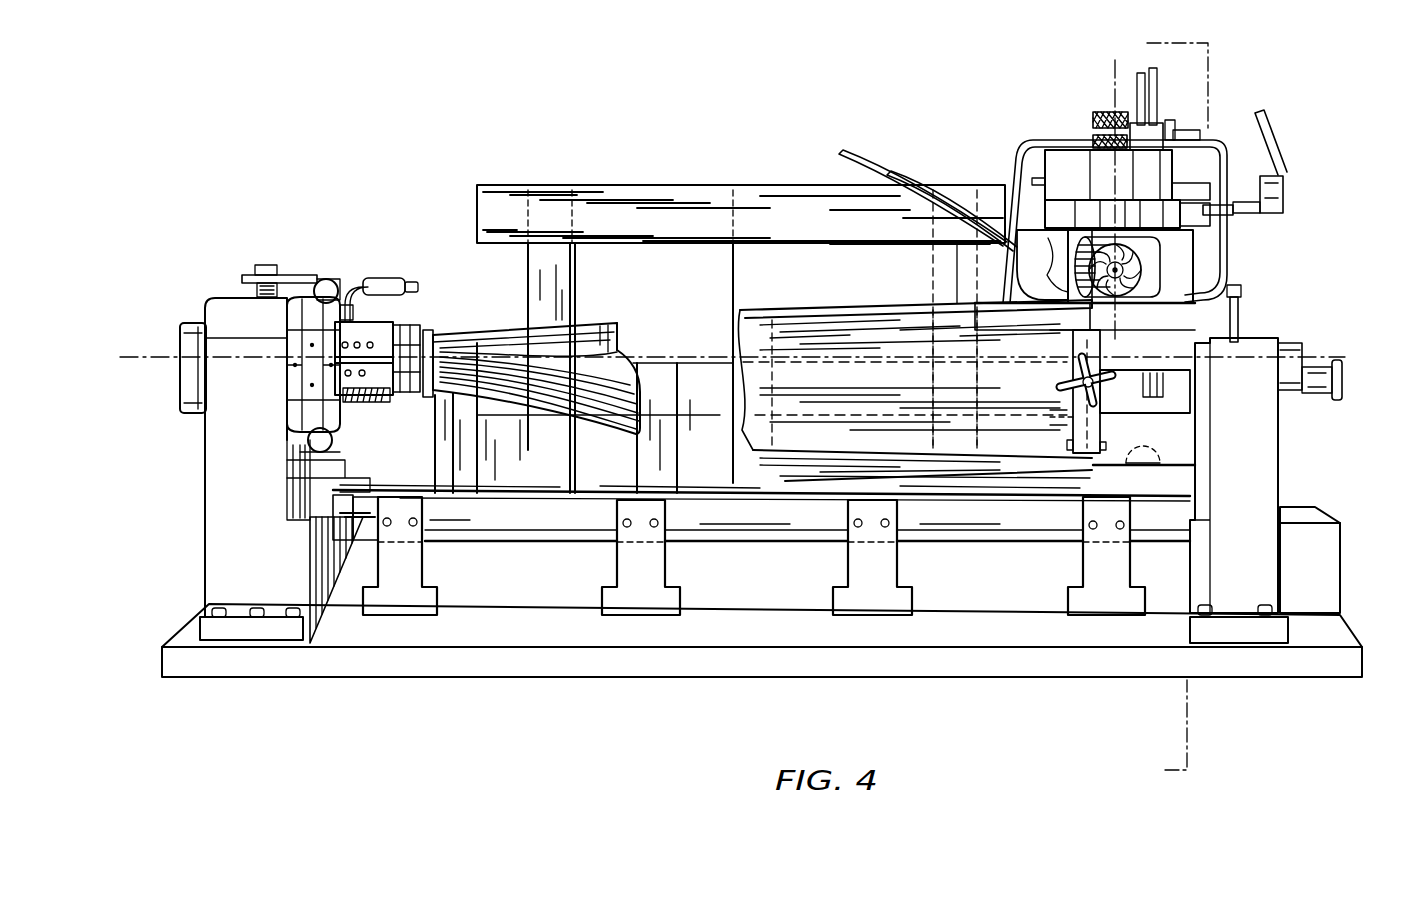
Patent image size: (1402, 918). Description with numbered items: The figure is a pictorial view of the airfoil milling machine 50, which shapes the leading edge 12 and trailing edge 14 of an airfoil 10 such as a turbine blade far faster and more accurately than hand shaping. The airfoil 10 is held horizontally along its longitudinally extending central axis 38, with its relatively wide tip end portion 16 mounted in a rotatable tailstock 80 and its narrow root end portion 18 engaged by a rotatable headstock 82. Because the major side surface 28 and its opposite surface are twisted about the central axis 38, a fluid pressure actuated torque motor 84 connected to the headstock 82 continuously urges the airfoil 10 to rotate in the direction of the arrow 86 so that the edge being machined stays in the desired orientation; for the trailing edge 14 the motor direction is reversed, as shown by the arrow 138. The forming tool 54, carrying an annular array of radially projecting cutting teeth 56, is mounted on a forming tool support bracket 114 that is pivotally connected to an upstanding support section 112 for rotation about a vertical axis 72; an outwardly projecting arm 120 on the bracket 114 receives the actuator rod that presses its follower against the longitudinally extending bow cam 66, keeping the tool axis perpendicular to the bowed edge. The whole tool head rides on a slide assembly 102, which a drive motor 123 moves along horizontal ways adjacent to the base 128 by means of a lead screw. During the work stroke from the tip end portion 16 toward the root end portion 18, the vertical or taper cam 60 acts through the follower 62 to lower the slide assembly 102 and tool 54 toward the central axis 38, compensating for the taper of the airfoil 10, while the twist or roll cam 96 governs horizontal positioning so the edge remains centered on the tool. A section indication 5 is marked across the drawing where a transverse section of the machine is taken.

The section line 5- 5 is at (1147, 43).
The airfoil 10 is at (512, 325).
The leading edge 12 is at (880, 309).
The trailing edge 14 is at (866, 463).
The tip end portion 16 is at (1093, 315).
The root end portion 18 is at (440, 395).
The major side surface 28 is at (614, 350).
The central axis 38 is at (155, 362).
The airfoil milling machine 50 is at (1334, 130).
The forming tool 54 is at (1070, 263).
The cutting teeth 56 is at (1141, 280).
The taper cam 60 is at (782, 532).
The follower 62 is at (1128, 466).
The bow cam 66 is at (762, 186).
The vertical axis 72 is at (1115, 78).
The tailstock 80 is at (1160, 325).
The headstock 82 is at (380, 412).
The torque motor 84 is at (182, 348).
The arrow 86 is at (581, 338).
The roll cam 96 is at (700, 407).
The slide assembly 102 is at (988, 545).
The support section 112 is at (1063, 165).
The forming tool support bracket 114 is at (1183, 257).
The outwardly projecting arm 120 is at (1203, 213).
The drive motor 123 is at (1322, 545).
The base 128 is at (715, 632).
The arrow 138 is at (572, 396).